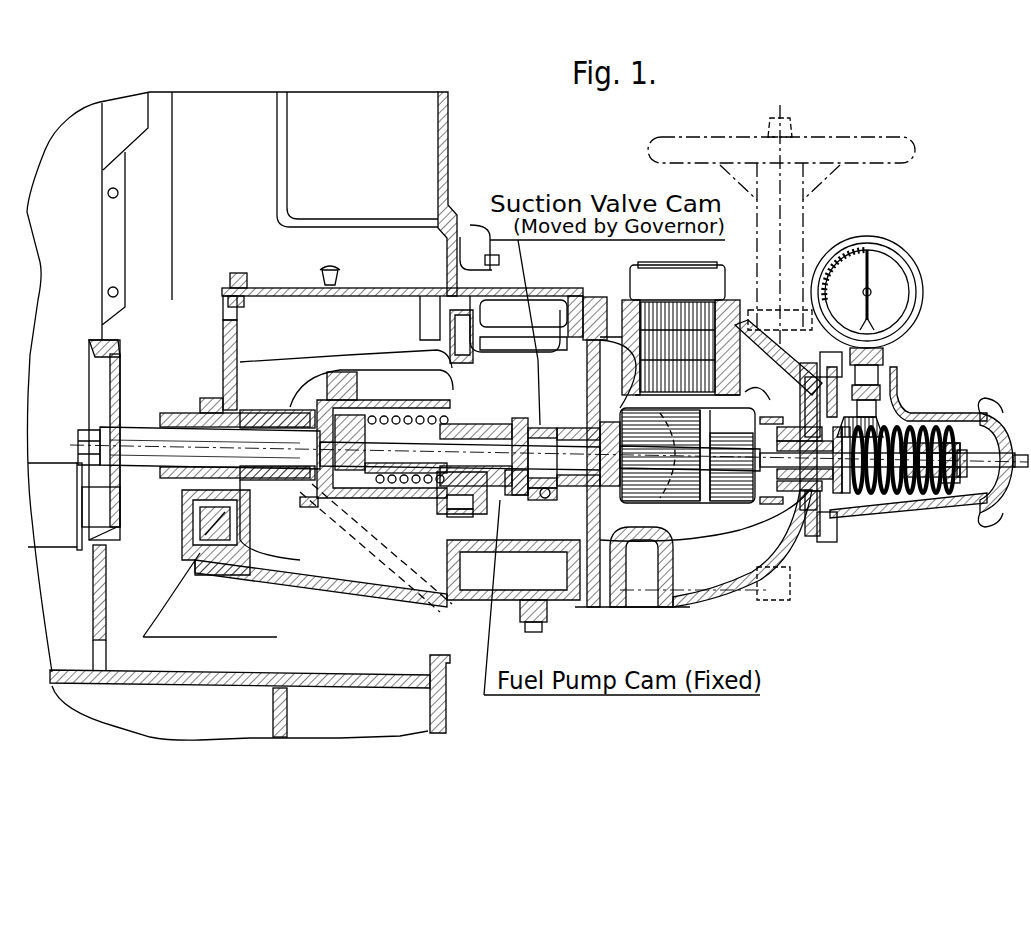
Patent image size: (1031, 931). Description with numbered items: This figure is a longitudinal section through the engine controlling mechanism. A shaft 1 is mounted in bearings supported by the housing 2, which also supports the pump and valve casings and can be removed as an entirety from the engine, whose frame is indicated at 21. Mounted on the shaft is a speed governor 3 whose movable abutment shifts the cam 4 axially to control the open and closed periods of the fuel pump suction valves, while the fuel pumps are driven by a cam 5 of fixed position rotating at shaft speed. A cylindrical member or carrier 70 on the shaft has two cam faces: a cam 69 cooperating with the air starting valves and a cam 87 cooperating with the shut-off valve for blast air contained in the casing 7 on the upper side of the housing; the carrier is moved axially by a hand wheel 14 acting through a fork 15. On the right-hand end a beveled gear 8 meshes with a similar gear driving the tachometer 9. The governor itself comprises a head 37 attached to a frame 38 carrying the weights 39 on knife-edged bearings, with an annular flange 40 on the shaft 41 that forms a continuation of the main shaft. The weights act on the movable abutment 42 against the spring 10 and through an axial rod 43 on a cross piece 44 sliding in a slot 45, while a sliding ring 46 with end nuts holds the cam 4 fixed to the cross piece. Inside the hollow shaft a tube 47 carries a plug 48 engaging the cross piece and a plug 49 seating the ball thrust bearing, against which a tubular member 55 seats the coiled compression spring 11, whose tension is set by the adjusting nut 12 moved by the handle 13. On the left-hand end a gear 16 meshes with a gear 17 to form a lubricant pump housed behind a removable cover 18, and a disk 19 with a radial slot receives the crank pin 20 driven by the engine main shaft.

The shaft 1 is at (180, 430).
The housing 2 is at (328, 588).
The speed governor 3 is at (398, 404).
The cam 4 is at (538, 500).
The cam 5 is at (488, 492).
The casing 7 is at (681, 328).
The beveled gear 8 is at (840, 508).
The tachometer 9 is at (867, 326).
The spring 10 is at (415, 497).
The coiled compression spring 11 is at (890, 493).
The adjusting nut 12 is at (960, 484).
The handle 13 is at (990, 513).
The hand wheel 14 is at (885, 163).
The fork 15 is at (770, 505).
The gear 16 is at (218, 410).
The gear 17 is at (182, 527).
The removable cover 18 is at (182, 506).
The disk 19 is at (120, 365).
The crank pin 20 is at (101, 507).
The frame 21 is at (140, 100).
The head 37 is at (312, 507).
The frame 38 is at (345, 525).
The weights 39 is at (392, 497).
The annular flange 40 is at (468, 517).
The shaft 41 is at (474, 430).
The movable abutment 42 is at (372, 404).
The rod 43 is at (482, 452).
The cross piece 44 is at (520, 495).
The slot 45 is at (540, 428).
The sliding ring 46 is at (546, 498).
The tube 47 is at (585, 488).
The plug 48 is at (573, 446).
The plug 49 is at (740, 395).
The tubular member 55 is at (895, 430).
The cam 69 is at (668, 414).
The cylindrical member or carrier 70 is at (686, 495).
The cam 87 is at (732, 505).